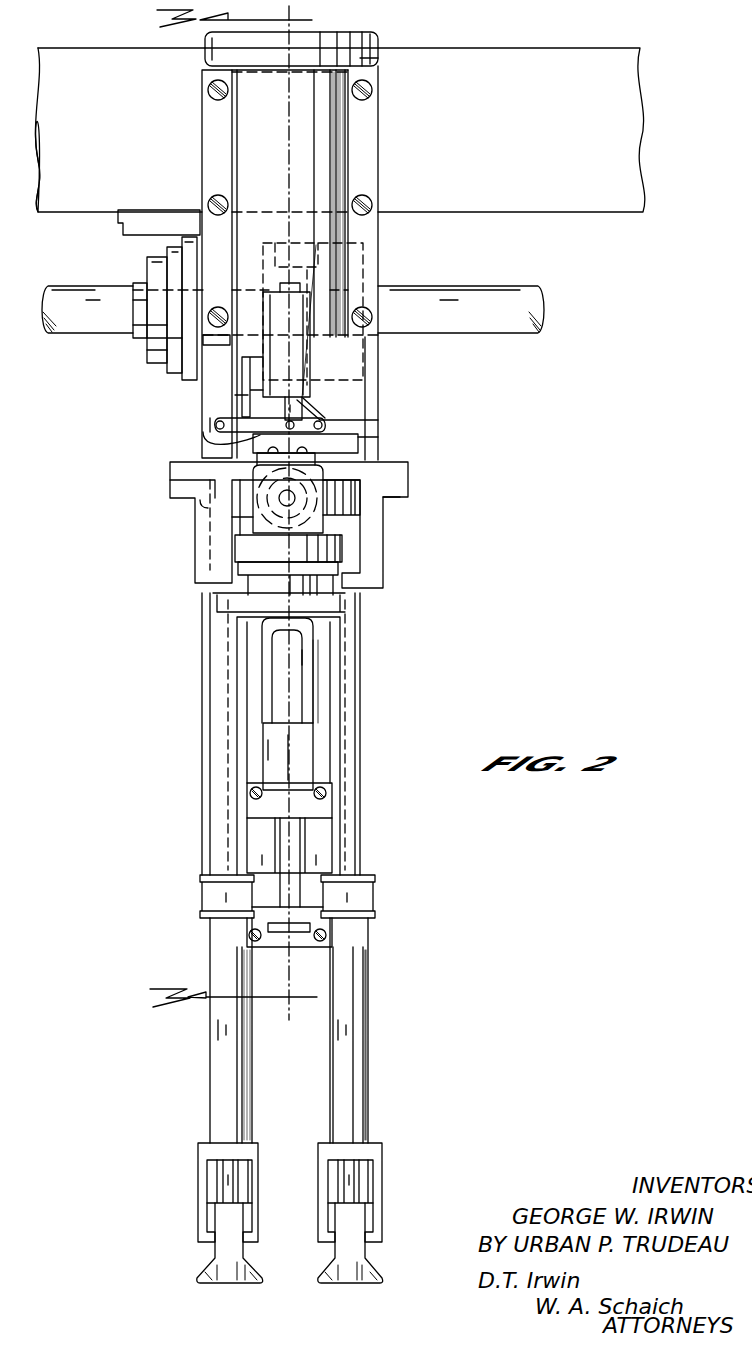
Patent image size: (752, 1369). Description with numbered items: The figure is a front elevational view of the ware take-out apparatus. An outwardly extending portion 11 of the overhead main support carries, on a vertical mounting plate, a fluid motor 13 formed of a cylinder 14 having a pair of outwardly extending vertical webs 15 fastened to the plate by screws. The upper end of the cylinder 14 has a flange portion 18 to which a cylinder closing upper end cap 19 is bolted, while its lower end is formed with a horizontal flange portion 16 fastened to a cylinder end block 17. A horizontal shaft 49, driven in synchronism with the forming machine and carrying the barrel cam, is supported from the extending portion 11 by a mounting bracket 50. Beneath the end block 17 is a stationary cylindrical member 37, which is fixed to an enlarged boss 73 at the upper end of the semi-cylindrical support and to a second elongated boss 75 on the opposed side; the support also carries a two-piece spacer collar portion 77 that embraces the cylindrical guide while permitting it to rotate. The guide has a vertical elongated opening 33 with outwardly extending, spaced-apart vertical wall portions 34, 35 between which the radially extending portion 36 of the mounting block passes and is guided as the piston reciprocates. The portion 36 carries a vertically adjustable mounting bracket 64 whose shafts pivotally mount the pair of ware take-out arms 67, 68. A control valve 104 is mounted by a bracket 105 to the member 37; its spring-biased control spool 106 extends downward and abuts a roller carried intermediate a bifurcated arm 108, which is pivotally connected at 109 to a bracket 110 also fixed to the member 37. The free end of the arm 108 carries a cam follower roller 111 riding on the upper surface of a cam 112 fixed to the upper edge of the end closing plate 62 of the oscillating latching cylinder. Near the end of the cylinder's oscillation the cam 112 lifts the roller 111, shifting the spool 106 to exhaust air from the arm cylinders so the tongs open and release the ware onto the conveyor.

The extending portion of main support 11 is at (556, 146).
The fluid motor 13 is at (222, 160).
The cylinder 14 is at (274, 150).
The vertical webs 15 is at (367, 152).
The horizontal flange portion 16 is at (217, 346).
The cylinder end block 17 is at (366, 396).
The flange portion 18 is at (372, 58).
The upper end cap 19 is at (378, 44).
The vertical elongated opening 33 is at (298, 662).
The vertical wall portion 34 is at (307, 689).
The vertical wall portion 35 is at (267, 684).
The radially extending portion 36 is at (282, 743).
The cylindrical member 37 is at (364, 456).
The horizontal shaft 49 is at (66, 300).
The mounting bracket 50 is at (187, 240).
The end closing plate 62 is at (263, 527).
The mounting bracket 64 is at (268, 808).
The ware take-out arm 67 is at (355, 898).
The ware take-out arm 68 is at (222, 896).
The enlarged boss 73 is at (386, 490).
The second elongated boss 75 is at (185, 483).
The spacer collar portion 77 is at (353, 551).
The control valve 104 is at (302, 356).
The bracket 105 is at (253, 373).
The control spool 106 is at (332, 404).
The bifurcated arm 108 is at (225, 437).
The pivot 109 is at (216, 425).
The bracket 110 is at (228, 398).
The cam follower roller 111 is at (335, 422).
The cam 112 is at (346, 444).